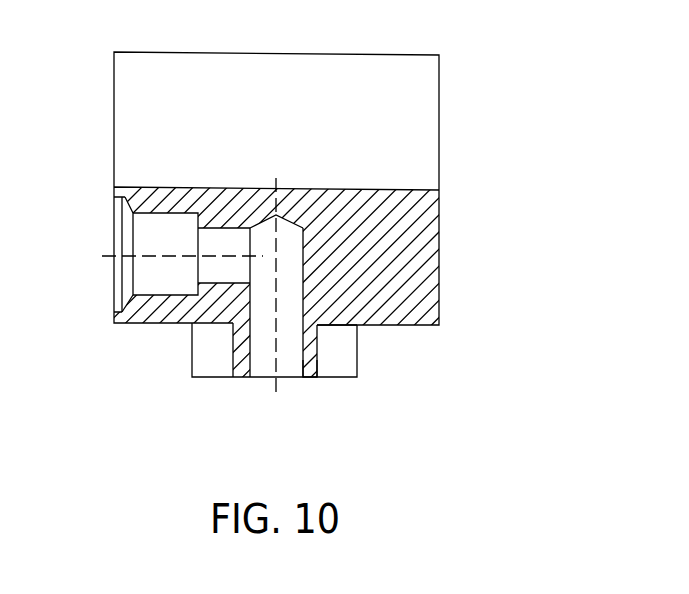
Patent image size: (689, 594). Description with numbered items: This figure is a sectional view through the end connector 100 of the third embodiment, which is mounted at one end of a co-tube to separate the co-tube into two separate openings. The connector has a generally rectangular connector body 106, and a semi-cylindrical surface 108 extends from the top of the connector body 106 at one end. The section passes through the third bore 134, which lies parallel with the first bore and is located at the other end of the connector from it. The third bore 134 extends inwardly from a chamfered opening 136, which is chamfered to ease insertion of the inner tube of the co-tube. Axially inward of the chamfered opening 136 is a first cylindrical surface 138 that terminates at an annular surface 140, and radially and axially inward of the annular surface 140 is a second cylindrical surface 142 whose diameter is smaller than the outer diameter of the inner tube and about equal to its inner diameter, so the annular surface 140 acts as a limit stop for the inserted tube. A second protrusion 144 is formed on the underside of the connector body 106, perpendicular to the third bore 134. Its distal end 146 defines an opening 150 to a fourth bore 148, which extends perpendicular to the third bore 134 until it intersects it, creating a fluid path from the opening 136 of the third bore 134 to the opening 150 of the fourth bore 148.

The end connector 100 is at (581, 36).
The connector body 106 is at (439, 235).
The semi-cylindrical surface 108 is at (248, 52).
The third bore 134 is at (173, 230).
The chamfered opening 136 is at (112, 249).
The first cylindrical surface 138 is at (142, 210).
The annular surface 140 is at (200, 221).
The second cylindrical surface 142 is at (252, 224).
The second protrusion 144 is at (317, 345).
The distal end 146 is at (307, 380).
The fourth bore 148 is at (263, 330).
The opening 150 is at (269, 378).